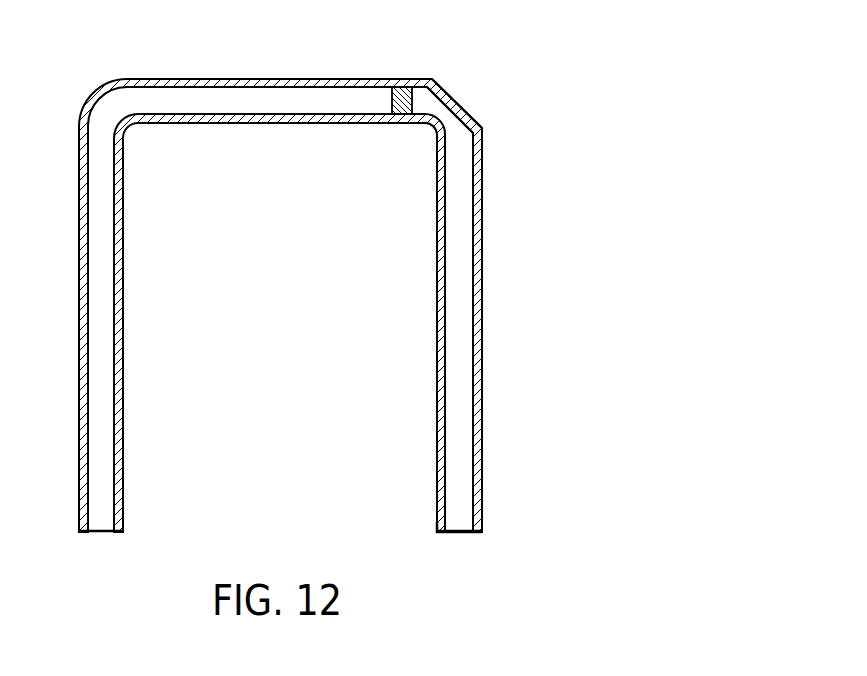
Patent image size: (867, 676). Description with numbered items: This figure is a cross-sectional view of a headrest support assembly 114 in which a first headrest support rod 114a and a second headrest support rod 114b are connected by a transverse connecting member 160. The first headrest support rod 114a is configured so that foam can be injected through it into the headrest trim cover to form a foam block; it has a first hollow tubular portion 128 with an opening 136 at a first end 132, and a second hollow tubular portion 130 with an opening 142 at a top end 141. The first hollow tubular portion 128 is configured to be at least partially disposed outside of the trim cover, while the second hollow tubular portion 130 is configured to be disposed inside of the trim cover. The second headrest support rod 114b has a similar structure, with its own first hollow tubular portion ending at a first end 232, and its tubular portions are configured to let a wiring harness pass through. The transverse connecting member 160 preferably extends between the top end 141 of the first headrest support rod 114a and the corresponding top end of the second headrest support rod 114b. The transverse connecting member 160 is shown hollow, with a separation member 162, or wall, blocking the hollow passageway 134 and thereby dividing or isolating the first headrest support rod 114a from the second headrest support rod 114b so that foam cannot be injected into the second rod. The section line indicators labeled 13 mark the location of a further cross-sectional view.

The headrest support assembly 114 is at (232, 130).
The first headrest support rod 114a is at (480, 333).
The second headrest support rod 114b is at (124, 381).
The first hollow tubular portion 128 is at (481, 492).
The second hollow tubular portion 130 is at (482, 263).
The first end 132 is at (481, 518).
The hollow passageway 134 is at (458, 441).
The opening 136 is at (445, 518).
The top end 141 is at (481, 144).
The opening 142 is at (440, 95).
The transverse connecting member 160 is at (190, 78).
The separation member 162 is at (405, 88).
The first end 232 is at (124, 517).
The section line 13- 13 is at (467, 90).